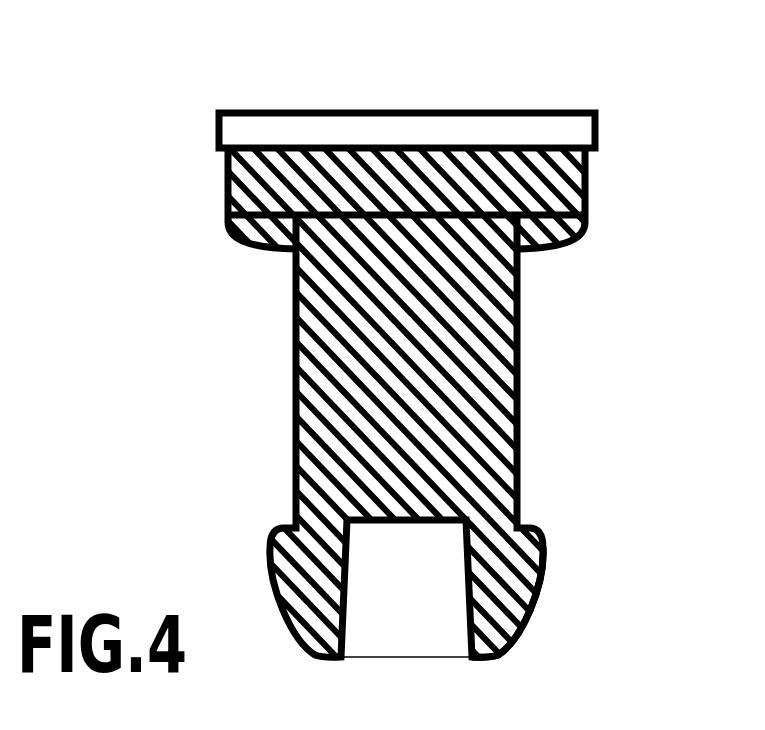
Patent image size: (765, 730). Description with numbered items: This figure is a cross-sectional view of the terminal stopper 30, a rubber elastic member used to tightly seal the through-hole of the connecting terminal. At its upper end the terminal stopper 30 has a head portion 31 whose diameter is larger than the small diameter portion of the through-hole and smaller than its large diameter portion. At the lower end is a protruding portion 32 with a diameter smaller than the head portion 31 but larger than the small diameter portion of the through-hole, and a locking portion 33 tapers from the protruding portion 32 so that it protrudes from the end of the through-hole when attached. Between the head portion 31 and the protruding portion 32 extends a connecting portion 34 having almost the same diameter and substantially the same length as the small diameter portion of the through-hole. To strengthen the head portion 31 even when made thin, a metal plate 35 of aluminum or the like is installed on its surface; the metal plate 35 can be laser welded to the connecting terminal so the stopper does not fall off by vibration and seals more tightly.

The terminal stopper 30 is at (146, 68).
The head portion 31 is at (586, 178).
The protruding portion 32 is at (540, 530).
The locking portion 33 is at (520, 619).
The connecting portion 34 is at (317, 399).
The metal plate 35 is at (527, 137).